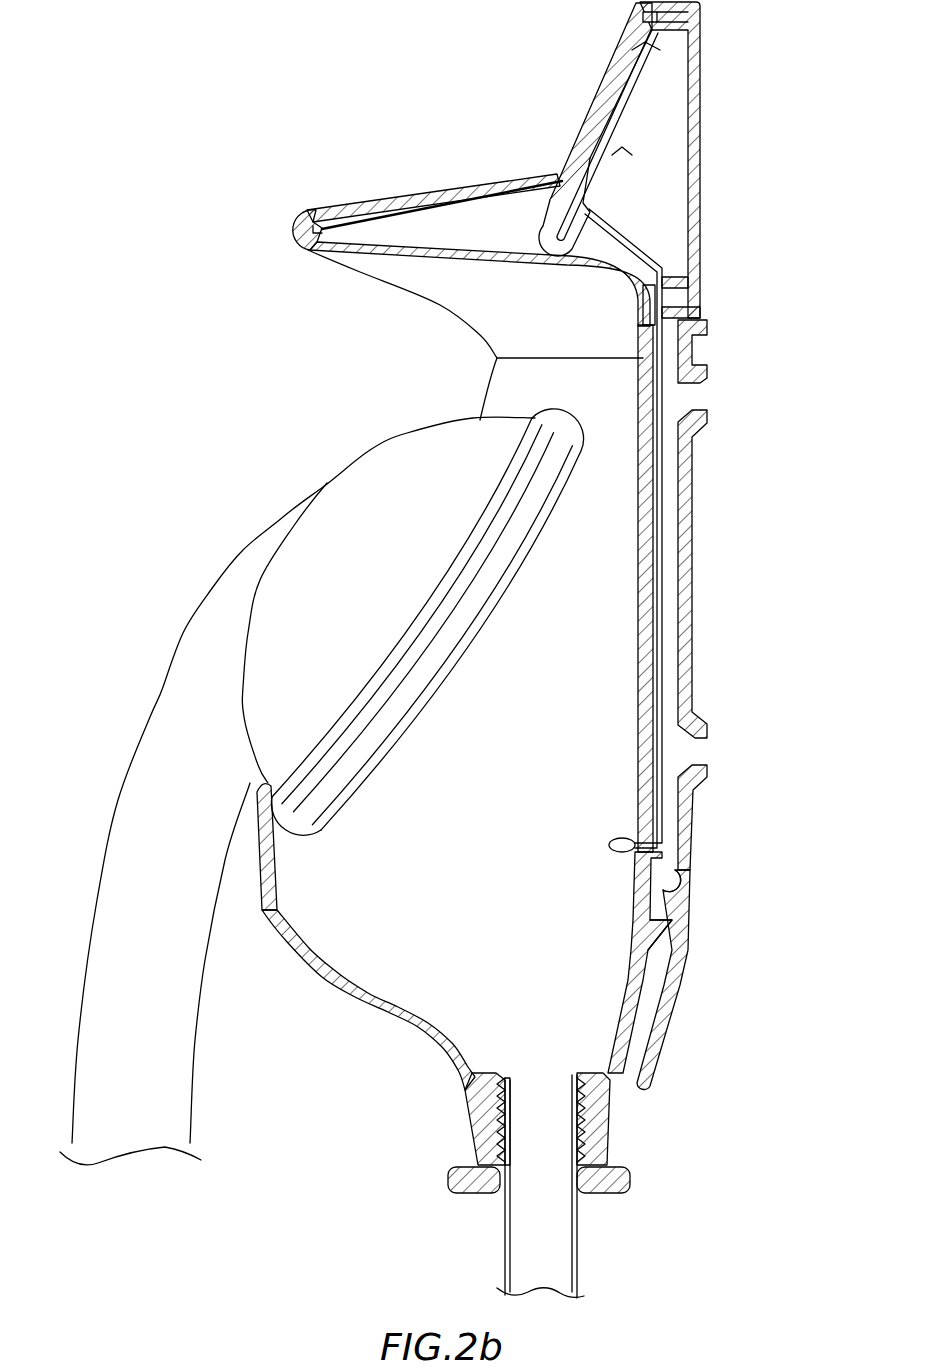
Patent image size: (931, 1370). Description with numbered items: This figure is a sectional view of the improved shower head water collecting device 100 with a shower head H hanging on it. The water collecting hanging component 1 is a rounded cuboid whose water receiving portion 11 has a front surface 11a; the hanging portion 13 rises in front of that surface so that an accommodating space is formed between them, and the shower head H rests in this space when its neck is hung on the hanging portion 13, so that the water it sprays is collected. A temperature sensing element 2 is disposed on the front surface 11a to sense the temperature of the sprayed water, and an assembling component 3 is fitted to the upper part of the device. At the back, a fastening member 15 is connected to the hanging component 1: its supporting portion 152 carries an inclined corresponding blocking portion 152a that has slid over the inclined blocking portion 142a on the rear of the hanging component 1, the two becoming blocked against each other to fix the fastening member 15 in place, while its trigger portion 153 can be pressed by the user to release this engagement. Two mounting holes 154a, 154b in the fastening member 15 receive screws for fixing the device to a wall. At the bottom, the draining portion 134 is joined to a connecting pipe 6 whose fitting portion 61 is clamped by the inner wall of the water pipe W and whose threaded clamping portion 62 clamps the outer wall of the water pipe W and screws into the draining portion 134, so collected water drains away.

The improved shower head water collecting device 100 is at (344, 80).
The assembling component 3 is at (304, 232).
The shower head H is at (400, 458).
The mounting hole 154a is at (683, 398).
The fastening member 15 is at (692, 541).
The front surface 11a is at (640, 742).
The mounting hole 154b is at (685, 752).
The supporting portion 152 is at (688, 800).
The temperature sensing element 2 is at (608, 845).
The hanging portion 13 is at (270, 853).
The corresponding blocking portion 152a is at (668, 883).
The blocking portion 142a is at (655, 928).
The water collecting hanging component 1 is at (290, 937).
The trigger portion 153 is at (668, 1022).
The water receiving portion 11 is at (437, 1042).
The fitting portion 61 is at (500, 1083).
The draining portion 134 is at (470, 1110).
The clamping portion 62 is at (590, 1113).
The connecting pipe 6 is at (620, 1178).
The water pipe W is at (577, 1240).